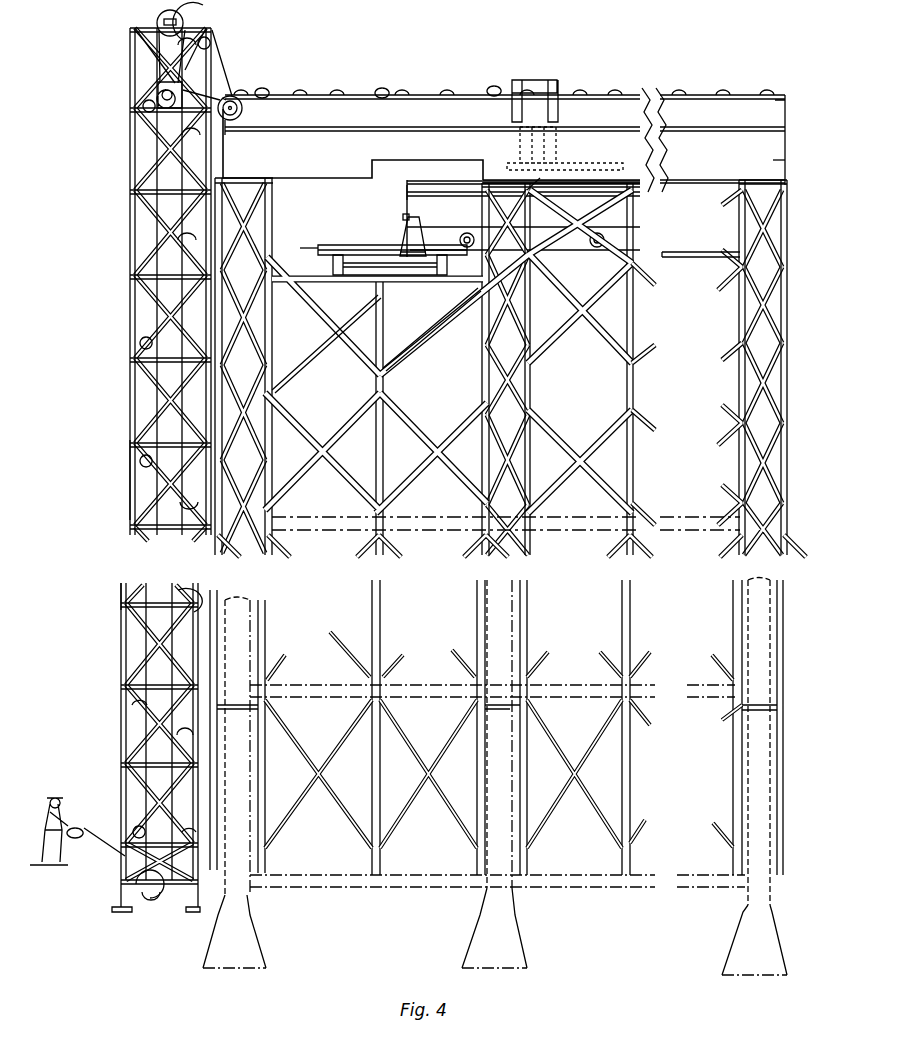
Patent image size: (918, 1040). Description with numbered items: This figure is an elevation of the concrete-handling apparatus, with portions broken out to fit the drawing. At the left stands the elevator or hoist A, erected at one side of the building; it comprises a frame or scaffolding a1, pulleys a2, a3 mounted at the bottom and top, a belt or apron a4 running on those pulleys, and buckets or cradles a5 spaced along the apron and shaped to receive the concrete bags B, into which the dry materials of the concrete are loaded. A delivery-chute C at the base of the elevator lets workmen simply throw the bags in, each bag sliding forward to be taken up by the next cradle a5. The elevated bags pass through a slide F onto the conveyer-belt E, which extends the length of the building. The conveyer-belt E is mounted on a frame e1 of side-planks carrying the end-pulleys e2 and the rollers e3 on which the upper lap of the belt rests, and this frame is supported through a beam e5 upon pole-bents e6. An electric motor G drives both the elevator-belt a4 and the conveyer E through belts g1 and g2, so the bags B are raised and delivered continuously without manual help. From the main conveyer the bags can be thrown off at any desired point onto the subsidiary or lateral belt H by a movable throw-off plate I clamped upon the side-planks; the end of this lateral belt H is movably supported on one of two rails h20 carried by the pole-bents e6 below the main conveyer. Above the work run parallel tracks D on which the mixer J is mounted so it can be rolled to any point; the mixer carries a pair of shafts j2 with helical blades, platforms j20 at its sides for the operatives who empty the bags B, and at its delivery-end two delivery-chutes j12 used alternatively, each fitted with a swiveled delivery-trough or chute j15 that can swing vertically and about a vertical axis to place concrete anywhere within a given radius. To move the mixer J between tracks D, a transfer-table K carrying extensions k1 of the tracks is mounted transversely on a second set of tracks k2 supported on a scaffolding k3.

The elevator or hoist A is at (155, 470).
The frame or scaffolding a1 is at (128, 476).
The pulley a2 is at (156, 890).
The pulley a3 is at (160, 18).
The belt or apron a4 is at (142, 586).
The buckets or cradles a5 is at (128, 9).
The concrete bags B is at (106, 826).
The delivery-chute C is at (106, 846).
The tracks D is at (672, 252).
The conveyer-belt E is at (422, 95).
The frame e1 is at (388, 114).
The end-pulleys e2 is at (786, 100).
The rollers e3 is at (622, 93).
The beam e5 is at (786, 162).
The pole-bents e6 is at (740, 206).
The slide F is at (228, 82).
The electric motor G is at (168, 100).
The belt g1 is at (165, 52).
The belt g2 is at (186, 88).
The subsidiary or lateral belt H is at (562, 160).
The rails h20 is at (690, 178).
The movable throw-off plate I is at (540, 84).
The mixer J is at (444, 186).
The shafts j2 is at (403, 217).
The delivery-chutes j12 is at (404, 240).
The swiveled delivery-trough or chute j15 is at (300, 392).
The platforms j20 is at (405, 190).
The transfer-table K is at (304, 256).
The extensions k1 is at (330, 246).
The second set of tracks k2 is at (392, 274).
The scaffolding k3 is at (386, 324).